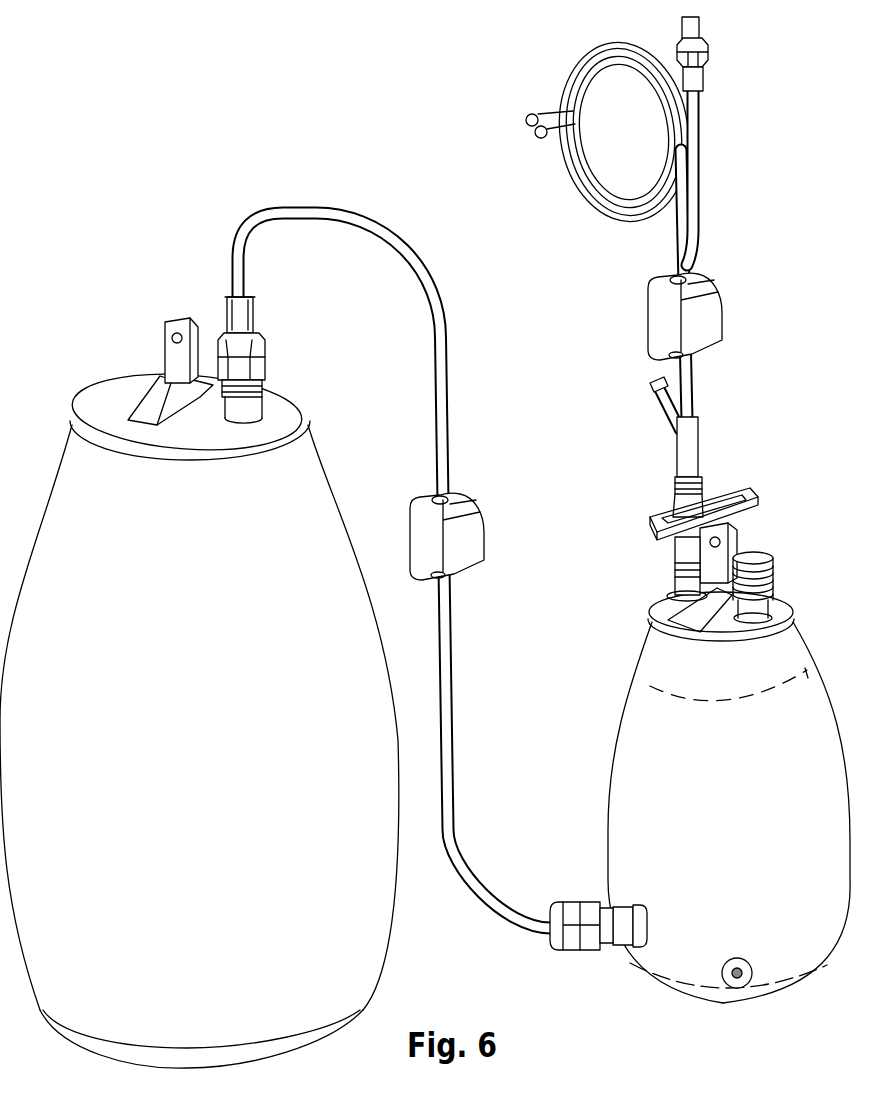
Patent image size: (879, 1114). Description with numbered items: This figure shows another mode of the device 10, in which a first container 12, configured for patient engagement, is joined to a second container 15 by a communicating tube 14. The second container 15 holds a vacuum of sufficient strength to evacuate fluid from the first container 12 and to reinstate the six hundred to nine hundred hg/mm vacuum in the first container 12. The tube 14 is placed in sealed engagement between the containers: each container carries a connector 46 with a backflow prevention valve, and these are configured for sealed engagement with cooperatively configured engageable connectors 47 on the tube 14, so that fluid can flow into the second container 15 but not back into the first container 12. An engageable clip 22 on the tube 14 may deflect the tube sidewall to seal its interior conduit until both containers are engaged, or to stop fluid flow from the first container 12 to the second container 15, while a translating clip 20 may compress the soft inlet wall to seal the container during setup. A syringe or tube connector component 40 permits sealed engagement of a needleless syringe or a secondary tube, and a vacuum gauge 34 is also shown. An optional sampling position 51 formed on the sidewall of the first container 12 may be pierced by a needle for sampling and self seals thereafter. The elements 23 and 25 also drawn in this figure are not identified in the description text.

The device 10 is at (337, 122).
The vacuum drainage container 12 is at (633, 717).
The tube 14 is at (291, 207).
The second container 15 is at (103, 388).
The clip 20 is at (757, 493).
The compression clip 22 is at (468, 525).
The mounting plate 23 is at (725, 493).
The coupling 25 is at (607, 900).
The vacuum gauge 34 is at (768, 553).
The syringe or tube connector component 40 is at (653, 400).
The connector 46 is at (270, 383).
The engageable connector 47 is at (228, 313).
The sampling position 51 is at (740, 970).